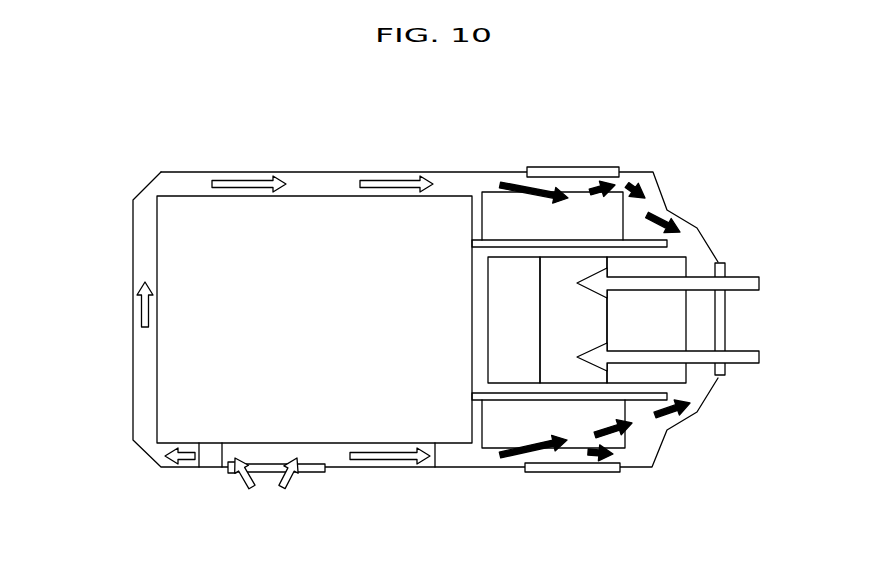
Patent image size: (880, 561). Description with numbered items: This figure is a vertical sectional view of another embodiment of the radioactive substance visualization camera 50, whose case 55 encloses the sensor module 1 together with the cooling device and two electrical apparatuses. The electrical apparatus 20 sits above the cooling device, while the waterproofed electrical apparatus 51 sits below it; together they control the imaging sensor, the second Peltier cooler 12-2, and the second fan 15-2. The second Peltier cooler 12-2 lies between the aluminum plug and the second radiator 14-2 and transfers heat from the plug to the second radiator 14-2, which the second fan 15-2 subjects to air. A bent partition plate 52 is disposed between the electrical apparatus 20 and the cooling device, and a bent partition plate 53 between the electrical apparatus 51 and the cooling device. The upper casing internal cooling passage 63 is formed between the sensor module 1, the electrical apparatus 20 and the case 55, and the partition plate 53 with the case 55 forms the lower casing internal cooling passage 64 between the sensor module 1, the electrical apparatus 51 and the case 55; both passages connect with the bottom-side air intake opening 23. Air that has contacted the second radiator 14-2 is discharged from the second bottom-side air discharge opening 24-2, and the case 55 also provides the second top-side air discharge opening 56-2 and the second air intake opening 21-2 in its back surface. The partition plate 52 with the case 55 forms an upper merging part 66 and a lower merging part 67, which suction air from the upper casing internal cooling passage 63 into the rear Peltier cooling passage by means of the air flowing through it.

The radioactive substance visualization camera 50 is at (392, 130).
The sensor module 1 is at (324, 188).
The case 55 is at (133, 326).
The upper casing internal cooling passage 63 is at (463, 188).
The lower casing internal cooling passage 64 is at (455, 453).
The electrical apparatus 20 is at (495, 207).
The electrical apparatus 51 is at (492, 440).
The partition plate 52 is at (640, 238).
The partition plate 53 is at (640, 400).
The second top-side air discharge opening 56-2 is at (553, 167).
The second bottom-side air discharge opening 24-2 is at (568, 473).
The bottom-side air intake opening 23 is at (308, 473).
The second Peltier cooler 12-2 is at (502, 273).
The second radiator 14-2 is at (557, 368).
The second fan 15-2 is at (677, 266).
The second air intake opening 21-2 is at (728, 368).
The upper merging part 66 is at (697, 245).
The lower merging part 67 is at (705, 400).